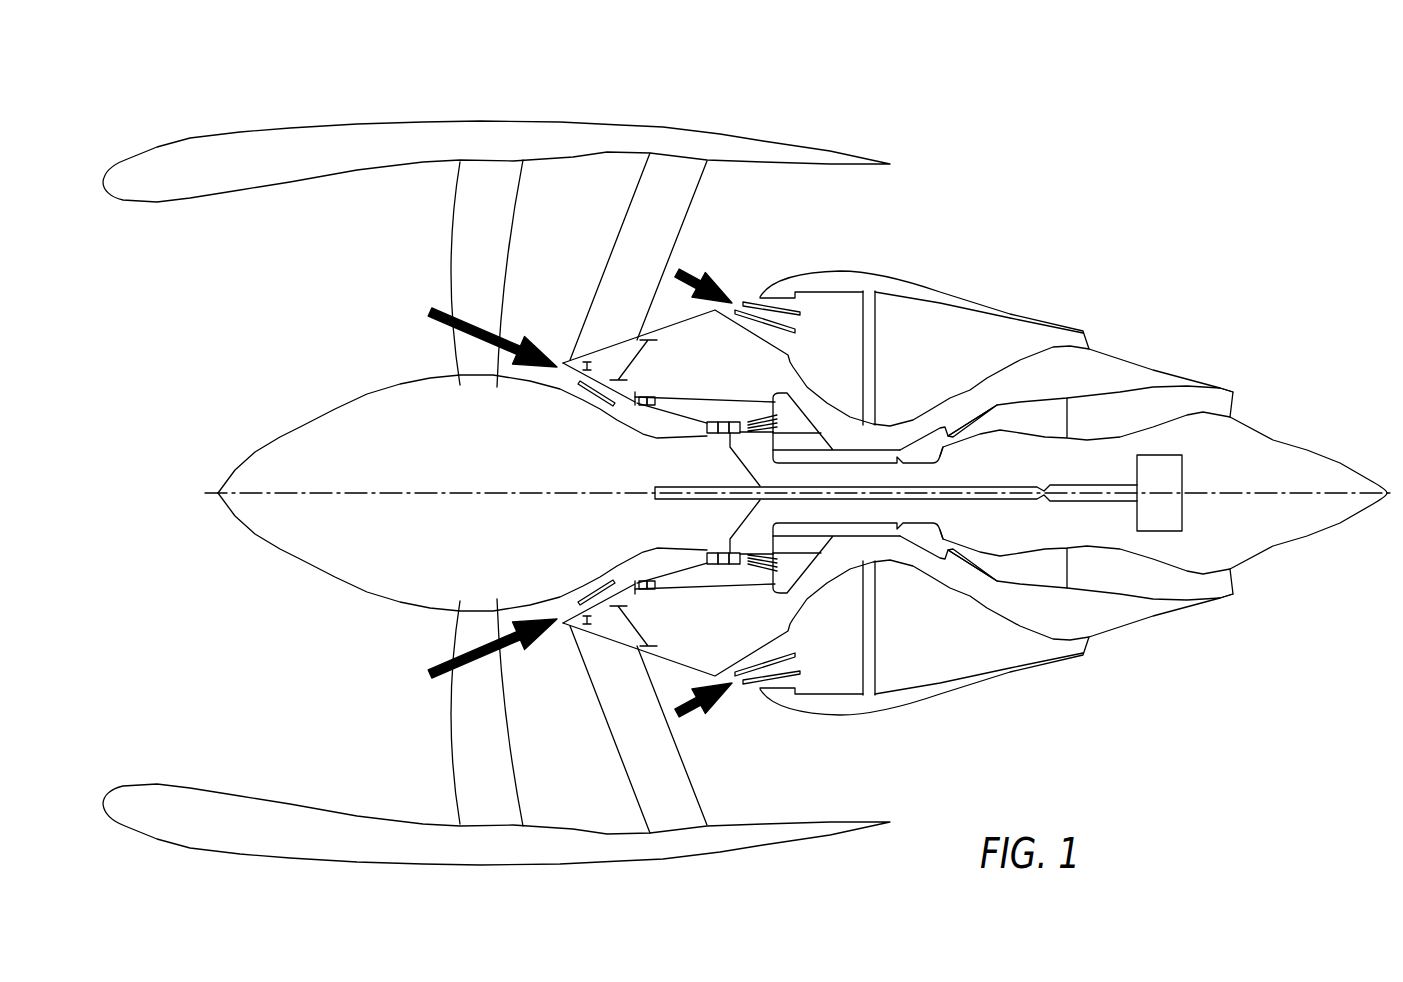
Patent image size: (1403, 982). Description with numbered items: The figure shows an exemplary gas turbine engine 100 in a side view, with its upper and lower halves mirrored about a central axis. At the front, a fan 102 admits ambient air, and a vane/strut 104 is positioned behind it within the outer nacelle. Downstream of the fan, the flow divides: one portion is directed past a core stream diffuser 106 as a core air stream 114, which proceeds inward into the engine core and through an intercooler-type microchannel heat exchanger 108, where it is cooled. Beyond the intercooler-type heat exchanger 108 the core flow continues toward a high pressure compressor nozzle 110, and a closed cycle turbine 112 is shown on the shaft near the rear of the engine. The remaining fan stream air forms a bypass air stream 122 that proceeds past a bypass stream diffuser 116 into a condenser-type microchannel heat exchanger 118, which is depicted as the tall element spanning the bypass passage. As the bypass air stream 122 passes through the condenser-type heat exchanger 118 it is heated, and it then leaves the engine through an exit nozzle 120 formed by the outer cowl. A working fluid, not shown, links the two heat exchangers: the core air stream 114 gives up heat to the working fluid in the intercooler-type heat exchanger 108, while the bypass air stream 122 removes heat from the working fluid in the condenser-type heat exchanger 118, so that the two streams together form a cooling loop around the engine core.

The gas turbine engine 100 is at (876, 118).
The fan 102 is at (445, 245).
The vane/strut 104 is at (622, 227).
The core stream diffuser 106 is at (757, 413).
The intercooler-type microchannel heat exchanger 108 is at (792, 440).
The high pressure compressor nozzle 110 is at (802, 457).
The closed cycle turbine 112 is at (1162, 456).
The core air stream 114 is at (437, 327).
The bypass stream diffuser 116 is at (800, 322).
The condenser-type microchannel heat exchanger 118 is at (878, 388).
The exit nozzle 120 is at (1083, 330).
The bypass air stream 122 is at (689, 272).